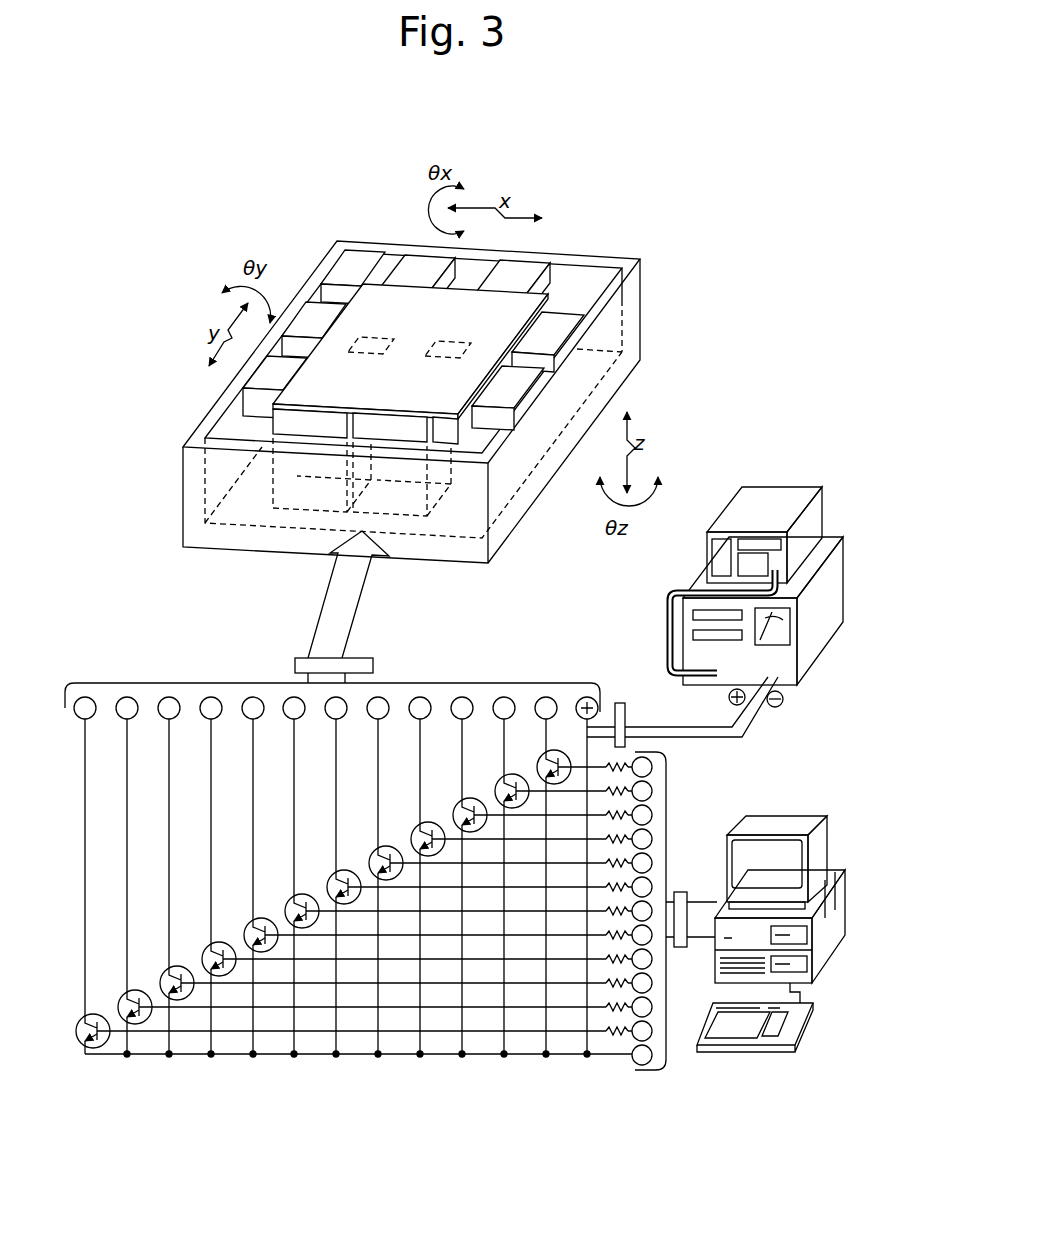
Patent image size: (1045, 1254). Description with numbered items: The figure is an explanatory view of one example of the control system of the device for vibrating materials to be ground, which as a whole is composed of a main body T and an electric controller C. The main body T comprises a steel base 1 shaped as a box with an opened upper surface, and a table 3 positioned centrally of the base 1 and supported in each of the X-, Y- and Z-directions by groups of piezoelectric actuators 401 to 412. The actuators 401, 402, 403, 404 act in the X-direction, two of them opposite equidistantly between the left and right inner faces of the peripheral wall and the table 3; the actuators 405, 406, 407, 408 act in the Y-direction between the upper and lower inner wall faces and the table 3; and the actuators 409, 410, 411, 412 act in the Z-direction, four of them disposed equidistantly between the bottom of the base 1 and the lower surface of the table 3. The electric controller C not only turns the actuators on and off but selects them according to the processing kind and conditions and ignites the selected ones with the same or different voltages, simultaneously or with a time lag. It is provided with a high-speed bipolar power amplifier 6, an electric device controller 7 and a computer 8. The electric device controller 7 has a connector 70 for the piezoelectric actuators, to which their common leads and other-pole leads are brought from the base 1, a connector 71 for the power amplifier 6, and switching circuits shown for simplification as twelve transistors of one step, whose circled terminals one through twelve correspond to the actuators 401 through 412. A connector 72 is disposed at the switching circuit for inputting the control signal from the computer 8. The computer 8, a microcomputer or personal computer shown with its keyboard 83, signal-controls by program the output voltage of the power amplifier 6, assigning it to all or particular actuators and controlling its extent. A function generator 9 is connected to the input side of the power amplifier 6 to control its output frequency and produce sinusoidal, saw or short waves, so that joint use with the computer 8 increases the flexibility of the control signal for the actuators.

The base 1 is at (183, 480).
The table 3 is at (530, 295).
The main body T is at (645, 288).
The piezoelectric actuator 401 is at (317, 310).
The piezoelectric actuator 402 is at (267, 368).
The piezoelectric actuator 403 is at (560, 323).
The piezoelectric actuator 404 is at (523, 380).
The piezoelectric actuator 405 is at (310, 430).
The piezoelectric actuator 406 is at (387, 435).
The piezoelectric actuator 407 is at (400, 270).
The piezoelectric actuator 408 is at (512, 270).
The piezoelectric actuator 409 is at (368, 333).
The piezoelectric actuator 410 is at (300, 478).
The piezoelectric actuator 411 is at (470, 338).
The piezoelectric actuator 412 is at (453, 480).
The power amplifier 6 is at (830, 620).
The function generator 9 is at (765, 498).
The electric device controller 7 is at (152, 1058).
The connector 70 is at (373, 666).
The connector 71 is at (621, 703).
The connector 72 is at (683, 892).
The computer 8 is at (823, 950).
The keyboard 83 is at (805, 1030).
The electric controller C is at (822, 810).